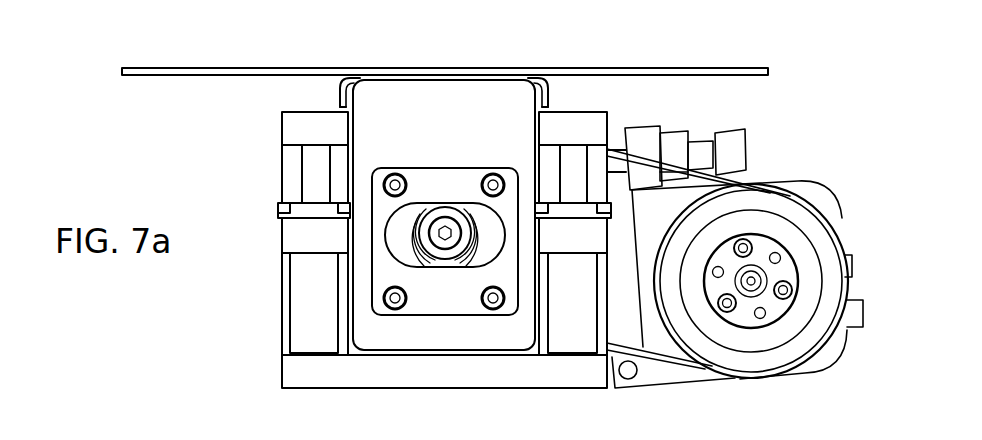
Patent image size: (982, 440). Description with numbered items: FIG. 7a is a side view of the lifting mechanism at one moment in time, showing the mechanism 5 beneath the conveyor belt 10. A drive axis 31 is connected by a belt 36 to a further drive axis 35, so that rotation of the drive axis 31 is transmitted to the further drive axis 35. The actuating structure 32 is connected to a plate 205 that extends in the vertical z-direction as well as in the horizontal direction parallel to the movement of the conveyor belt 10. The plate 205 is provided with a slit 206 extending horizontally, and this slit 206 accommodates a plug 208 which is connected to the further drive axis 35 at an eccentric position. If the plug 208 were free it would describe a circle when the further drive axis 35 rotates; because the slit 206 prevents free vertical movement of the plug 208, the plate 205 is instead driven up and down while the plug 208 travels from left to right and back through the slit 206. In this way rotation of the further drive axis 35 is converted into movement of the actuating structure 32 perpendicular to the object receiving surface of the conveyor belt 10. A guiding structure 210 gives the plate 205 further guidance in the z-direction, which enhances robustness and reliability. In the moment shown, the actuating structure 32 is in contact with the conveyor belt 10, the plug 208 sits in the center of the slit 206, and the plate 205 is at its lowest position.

The assembly 5 is at (636, 60).
The conveyor belt 10 is at (192, 70).
The actuating structure 32 is at (351, 77).
The further drive axis 35 is at (470, 207).
The plate 205 is at (520, 97).
The slit 206 is at (473, 268).
The plug 208 is at (422, 224).
The guiding structure 210 is at (303, 292).
The belt 36 is at (690, 166).
The drive axis 31 is at (797, 213).